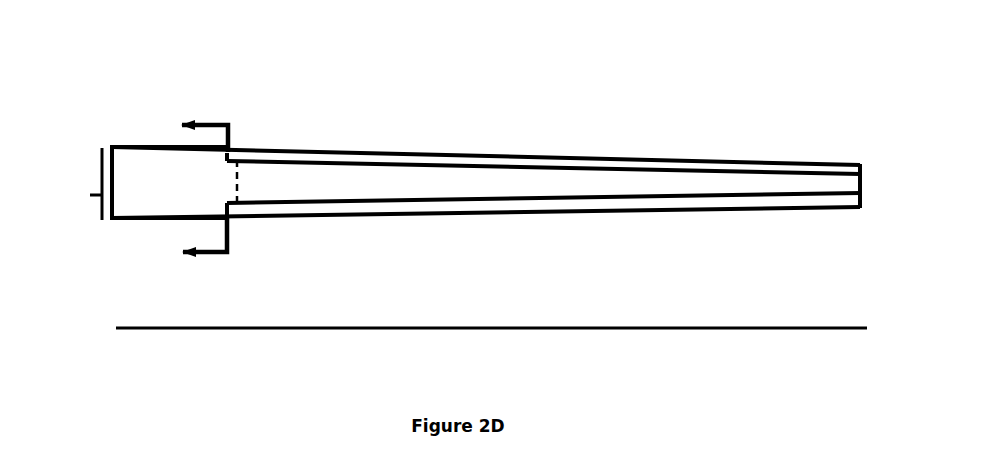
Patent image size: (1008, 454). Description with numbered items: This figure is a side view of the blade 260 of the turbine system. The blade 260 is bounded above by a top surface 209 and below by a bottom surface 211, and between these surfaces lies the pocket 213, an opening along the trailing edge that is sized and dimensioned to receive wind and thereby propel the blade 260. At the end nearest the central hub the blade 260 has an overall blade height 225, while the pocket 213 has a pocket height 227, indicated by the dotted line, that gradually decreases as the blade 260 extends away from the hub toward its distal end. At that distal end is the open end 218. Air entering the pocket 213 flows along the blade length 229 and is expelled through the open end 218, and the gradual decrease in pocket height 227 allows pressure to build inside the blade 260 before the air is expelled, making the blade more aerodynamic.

The blade 260 is at (165, 63).
The top surface 209 is at (478, 154).
The bottom surface 211 is at (400, 215).
The pocket 213 is at (477, 178).
The open end 218 is at (868, 182).
The blade height 225 is at (102, 195).
The pocket height 227 is at (238, 185).
The blade length 229 is at (491, 355).